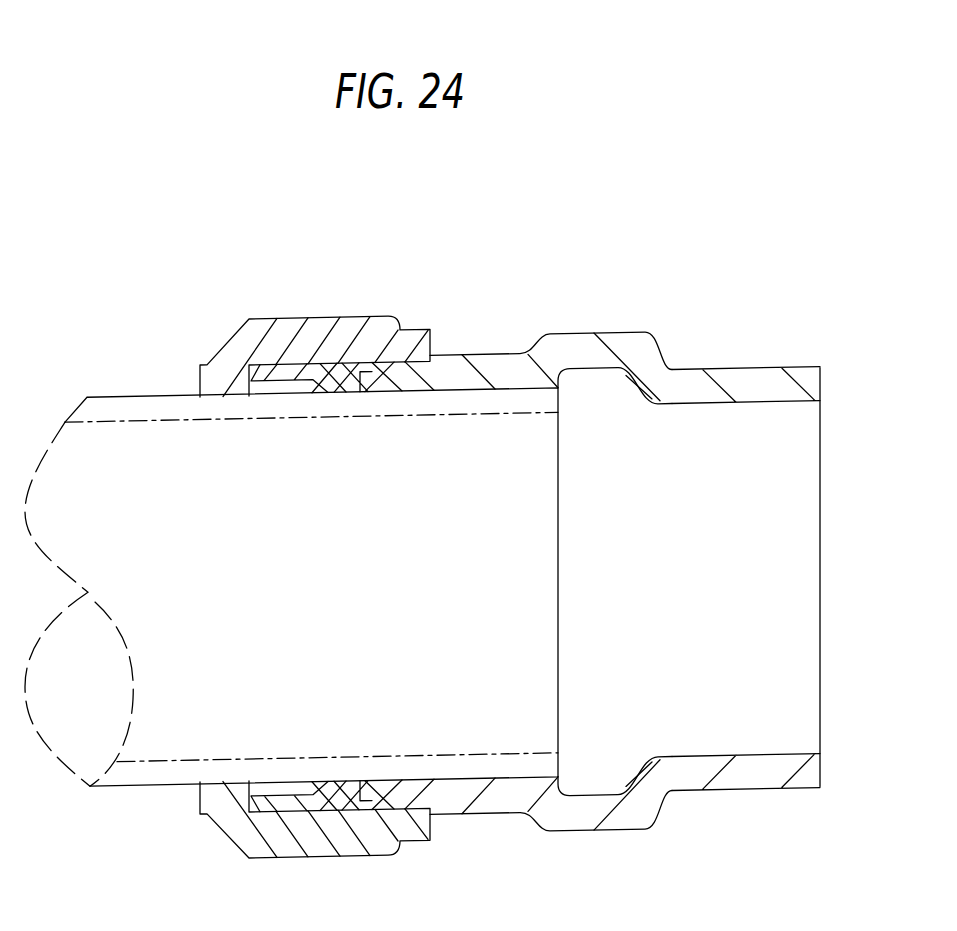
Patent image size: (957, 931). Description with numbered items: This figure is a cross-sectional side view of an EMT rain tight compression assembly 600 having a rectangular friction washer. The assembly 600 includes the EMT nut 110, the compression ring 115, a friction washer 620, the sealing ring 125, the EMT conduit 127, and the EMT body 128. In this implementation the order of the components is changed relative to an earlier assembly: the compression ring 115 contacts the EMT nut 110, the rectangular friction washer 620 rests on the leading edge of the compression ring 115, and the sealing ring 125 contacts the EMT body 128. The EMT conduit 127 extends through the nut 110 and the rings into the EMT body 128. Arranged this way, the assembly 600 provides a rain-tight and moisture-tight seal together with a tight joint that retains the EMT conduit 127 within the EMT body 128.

The EMT rain tight compression assembly 600 is at (187, 244).
The EMT conduit 127 is at (120, 397).
The EMT nut 110 is at (273, 318).
The compression ring 115 is at (298, 362).
The friction washer 620 is at (345, 353).
The sealing ring 125 is at (388, 363).
The EMT body 128 is at (822, 468).